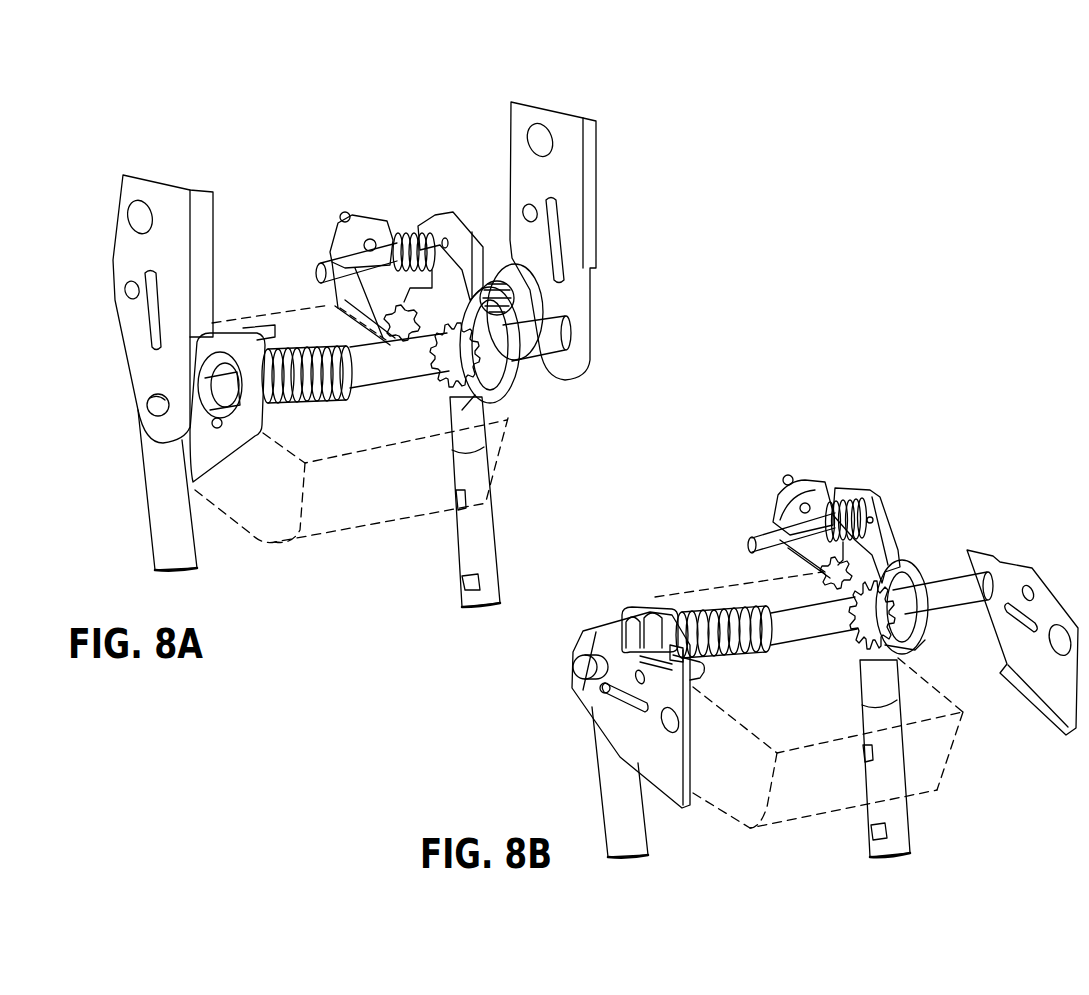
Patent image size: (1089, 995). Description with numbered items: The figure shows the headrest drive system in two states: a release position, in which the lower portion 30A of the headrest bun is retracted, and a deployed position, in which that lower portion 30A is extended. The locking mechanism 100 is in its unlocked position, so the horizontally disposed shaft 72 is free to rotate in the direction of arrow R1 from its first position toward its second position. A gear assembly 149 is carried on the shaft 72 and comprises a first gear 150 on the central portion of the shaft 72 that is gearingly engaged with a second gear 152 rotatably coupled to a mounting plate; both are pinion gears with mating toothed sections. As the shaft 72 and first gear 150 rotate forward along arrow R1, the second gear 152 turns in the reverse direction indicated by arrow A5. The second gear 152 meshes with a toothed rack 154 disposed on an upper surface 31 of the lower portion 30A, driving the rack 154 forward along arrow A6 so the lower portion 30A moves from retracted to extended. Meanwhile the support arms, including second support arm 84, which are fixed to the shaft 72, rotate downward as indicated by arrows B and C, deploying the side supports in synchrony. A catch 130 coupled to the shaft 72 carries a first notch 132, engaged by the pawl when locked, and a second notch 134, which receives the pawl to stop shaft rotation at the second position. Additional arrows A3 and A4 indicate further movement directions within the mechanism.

In FIG. 8A, the rack 154 is at (335, 308).
In FIG. 8A, the arrow A3 is at (374, 206).
In FIG. 8A, the arrow A5 is at (378, 308).
In FIG. 8A, the locking mechanism 100 is at (418, 213).
In FIG. 8A, the arrow A4 is at (468, 245).
In FIG. 8A, the arrow B is at (168, 153).
In FIG. 8A, the arrow C is at (565, 90).
In FIG. 8A, the arrow A6 is at (312, 294).
In FIG. 8A, the upper surface 31 is at (282, 318).
In FIG. 8A, the arrow R1 is at (355, 411).
In FIG. 8A, the first notch 132 is at (505, 372).
In FIG. 8B, the first notch 132 is at (907, 653).
In FIG. 8A, the gear assembly 149 is at (490, 392).
In FIG. 8B, the gear assembly 149 is at (845, 658).
In FIG. 8A, the first gear 150 is at (450, 392).
In FIG. 8A, the second gear 152 is at (410, 340).
In FIG. 8A, the shaft 72 is at (348, 400).
In FIG. 8B, the shaft 72 is at (790, 620).
In FIG. 8A, the lower portion of the headrest bun 30A is at (245, 540).
In FIG. 8B, the lower portion of the headrest bun 30A is at (803, 800).
In FIG. 8B, the second notch 134 is at (898, 585).
In FIG. 8B, the catch 130 is at (910, 595).
In FIG. 8B, the second support arm 84 is at (648, 748).